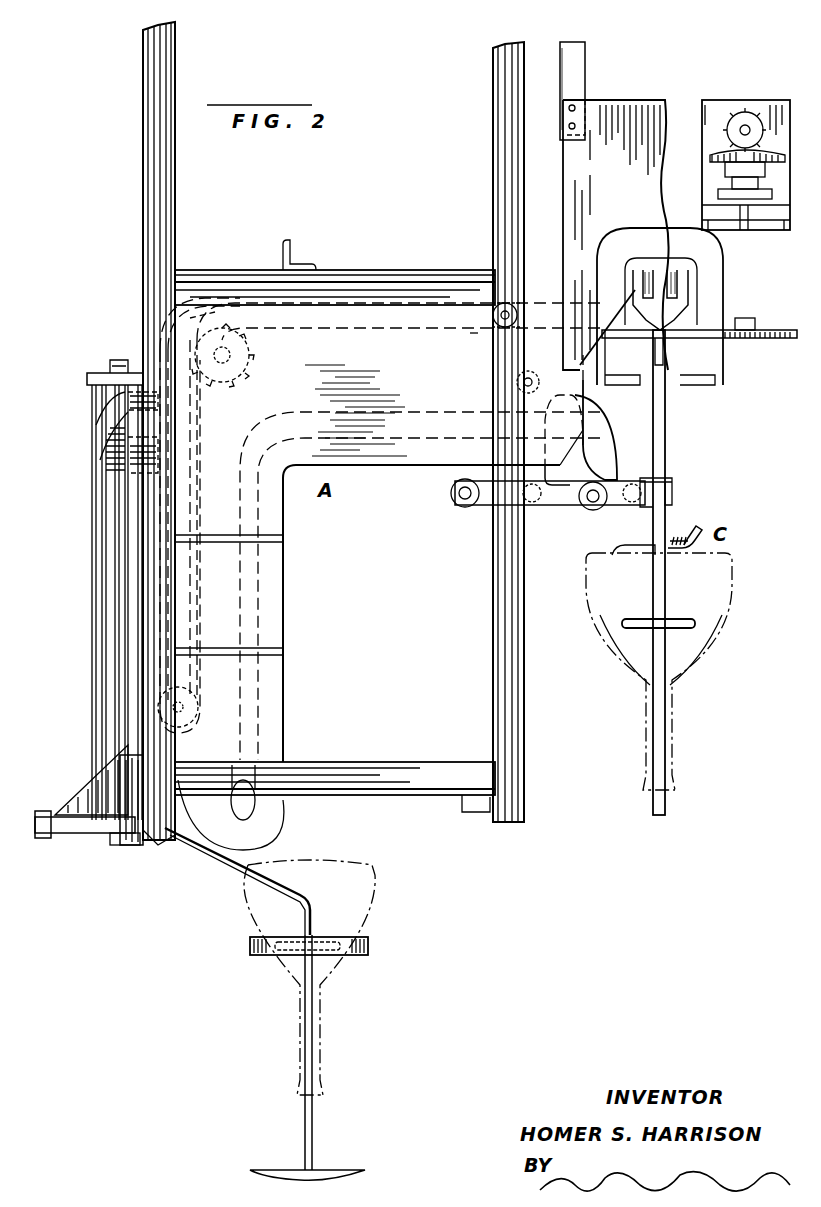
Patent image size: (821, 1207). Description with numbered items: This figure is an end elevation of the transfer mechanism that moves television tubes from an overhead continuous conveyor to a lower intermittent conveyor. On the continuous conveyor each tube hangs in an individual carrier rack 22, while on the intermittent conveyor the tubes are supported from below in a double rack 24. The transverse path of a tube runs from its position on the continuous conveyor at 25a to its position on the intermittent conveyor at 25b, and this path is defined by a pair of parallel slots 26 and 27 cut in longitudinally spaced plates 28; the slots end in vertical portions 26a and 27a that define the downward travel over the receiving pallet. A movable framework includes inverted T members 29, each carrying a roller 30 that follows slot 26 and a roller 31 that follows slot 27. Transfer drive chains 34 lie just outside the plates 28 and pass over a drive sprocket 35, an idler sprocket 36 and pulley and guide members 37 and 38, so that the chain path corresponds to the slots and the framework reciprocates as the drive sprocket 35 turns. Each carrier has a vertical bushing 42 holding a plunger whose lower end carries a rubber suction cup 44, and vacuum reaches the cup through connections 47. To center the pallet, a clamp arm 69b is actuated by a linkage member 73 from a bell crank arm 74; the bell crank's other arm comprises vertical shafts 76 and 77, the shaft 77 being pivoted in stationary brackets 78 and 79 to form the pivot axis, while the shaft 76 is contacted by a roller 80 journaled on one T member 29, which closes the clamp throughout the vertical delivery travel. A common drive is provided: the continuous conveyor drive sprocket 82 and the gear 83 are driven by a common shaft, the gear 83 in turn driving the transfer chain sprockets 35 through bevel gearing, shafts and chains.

The carrier rack 22 is at (666, 462).
The double rack 24 is at (322, 960).
The tube position on continuous conveyor 25a is at (612, 640).
The tube position on intermittent conveyor 25b is at (378, 890).
The slot 26 is at (598, 445).
The vertical portion of slot 26a is at (250, 806).
The slot 27 is at (406, 312).
The vertical portion of slot 27a is at (178, 524).
The plate 28 is at (275, 601).
The inverted T member 29 is at (556, 494).
The roller 30 is at (592, 503).
The roller 31 is at (516, 384).
The transfer drive chain 34 is at (478, 333).
The drive sprocket 35 is at (492, 316).
The idler sprocket 36 is at (190, 692).
The pulley and guide member 37 is at (236, 360).
The pulley and guide member 38 is at (220, 316).
The vertical bushing 42 is at (670, 496).
The rubber suction cup 44 is at (630, 545).
The connection 47 is at (700, 528).
The clamp arm 69b is at (225, 860).
The linkage member 73 is at (42, 838).
The bell crank arm 74 is at (86, 832).
The vertical shaft 76 is at (92, 594).
The vertical shaft 77 is at (115, 648).
The stationary bracket 78 is at (128, 845).
The stationary bracket 79 is at (112, 364).
The roller 80 is at (463, 507).
The continuous conveyor drive sprocket 82 is at (752, 338).
The gear 83 is at (708, 157).